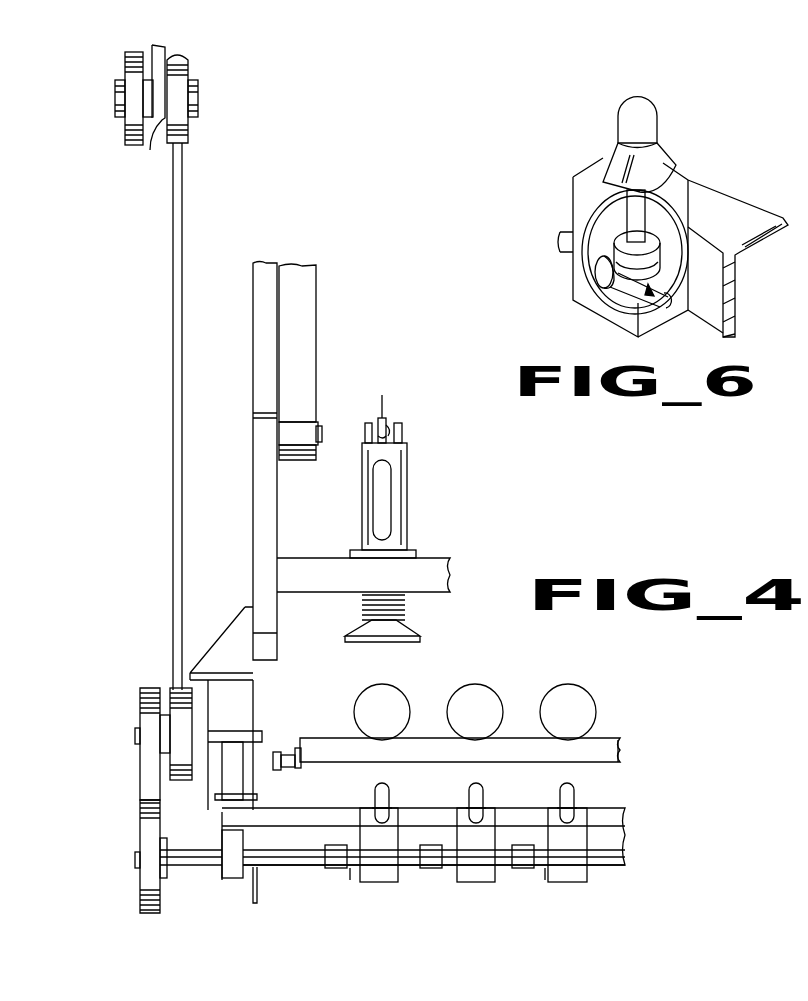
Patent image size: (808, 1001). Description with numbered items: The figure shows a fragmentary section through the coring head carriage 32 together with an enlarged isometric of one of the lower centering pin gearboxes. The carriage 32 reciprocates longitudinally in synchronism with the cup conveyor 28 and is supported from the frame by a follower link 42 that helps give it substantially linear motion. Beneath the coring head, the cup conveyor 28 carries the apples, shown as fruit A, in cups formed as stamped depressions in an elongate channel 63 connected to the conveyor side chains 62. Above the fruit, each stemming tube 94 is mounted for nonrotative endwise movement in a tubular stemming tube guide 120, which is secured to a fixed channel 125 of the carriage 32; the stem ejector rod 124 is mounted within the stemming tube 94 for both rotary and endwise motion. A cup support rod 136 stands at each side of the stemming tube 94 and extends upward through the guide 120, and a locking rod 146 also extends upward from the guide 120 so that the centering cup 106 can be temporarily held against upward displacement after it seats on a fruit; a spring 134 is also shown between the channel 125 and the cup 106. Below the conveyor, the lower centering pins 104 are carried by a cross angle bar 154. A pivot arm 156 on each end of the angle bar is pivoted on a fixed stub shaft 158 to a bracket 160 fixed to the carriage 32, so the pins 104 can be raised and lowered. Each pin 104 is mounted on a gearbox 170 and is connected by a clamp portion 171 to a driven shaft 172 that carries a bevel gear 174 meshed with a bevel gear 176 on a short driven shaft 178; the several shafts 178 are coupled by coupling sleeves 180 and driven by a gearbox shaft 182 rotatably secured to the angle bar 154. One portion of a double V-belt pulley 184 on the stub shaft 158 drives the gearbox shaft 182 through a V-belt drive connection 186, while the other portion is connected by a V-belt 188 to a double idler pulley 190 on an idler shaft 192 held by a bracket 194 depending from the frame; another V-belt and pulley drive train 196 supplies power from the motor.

In FIG. 4, the cup conveyor 28 is at (626, 730).
In FIG. 4, the coring head carriage 32 is at (252, 506).
In FIG. 4, the follower link 42 is at (318, 310).
In FIG. 4, the cup conveyor side chains 62 is at (285, 750).
In FIG. 4, the elongate channel 63 is at (622, 762).
In FIG. 4, the stemming tube 94 is at (390, 425).
In FIG. 4, the lower centering pin 104 is at (386, 786).
In FIG. 6, the lower centering pin 104 is at (650, 106).
In FIG. 4, the centering cup 106 is at (412, 633).
In FIG. 4, the stemming tube guide 120 is at (407, 494).
In FIG. 4, the stem ejector rod 124 is at (381, 407).
In FIG. 4, the fixed channel 125 is at (425, 560).
In FIG. 4, the spring 134 is at (408, 606).
In FIG. 4, the cup support rod 136 is at (402, 436).
In FIG. 4, the locking rod 146 is at (388, 440).
In FIG. 4, the cross angle bar 154 is at (612, 840).
In FIG. 6, the cross angle bar 154 is at (716, 190).
In FIG. 4, the pivot arm 156 is at (257, 798).
In FIG. 4, the stub shaft 158 is at (246, 731).
In FIG. 4, the bracket 160 is at (190, 688).
In FIG. 4, the gearbox 170 is at (380, 878).
In FIG. 6, the gearbox 170 is at (578, 197).
In FIG. 4, the clamp portion 171 is at (388, 810).
In FIG. 6, the clamp portion 171 is at (662, 150).
In FIG. 6, the driven shaft 172 is at (624, 228).
In FIG. 6, the bevel gear 174 is at (614, 262).
In FIG. 6, the bevel gear 176 is at (598, 283).
In FIG. 4, the short driven shaft 178 is at (352, 870).
In FIG. 6, the short driven shaft 178 is at (556, 234).
In FIG. 4, the coupling sleeve 180 is at (330, 870).
In FIG. 4, the gearbox shaft 182 is at (226, 870).
In FIG. 4, the double V-belt pulley 184 is at (140, 716).
In FIG. 4, the V-belt drive connection 186 is at (145, 792).
In FIG. 4, the V-belt 188 is at (173, 298).
In FIG. 4, the double idler pulley 190 is at (190, 73).
In FIG. 4, the idler shaft 192 is at (199, 98).
In FIG. 4, the bracket 194 is at (158, 122).
In FIG. 4, the V-belt and pulley drive train 196 is at (130, 57).
In FIG. 4, the articles (fruit) A is at (545, 690).